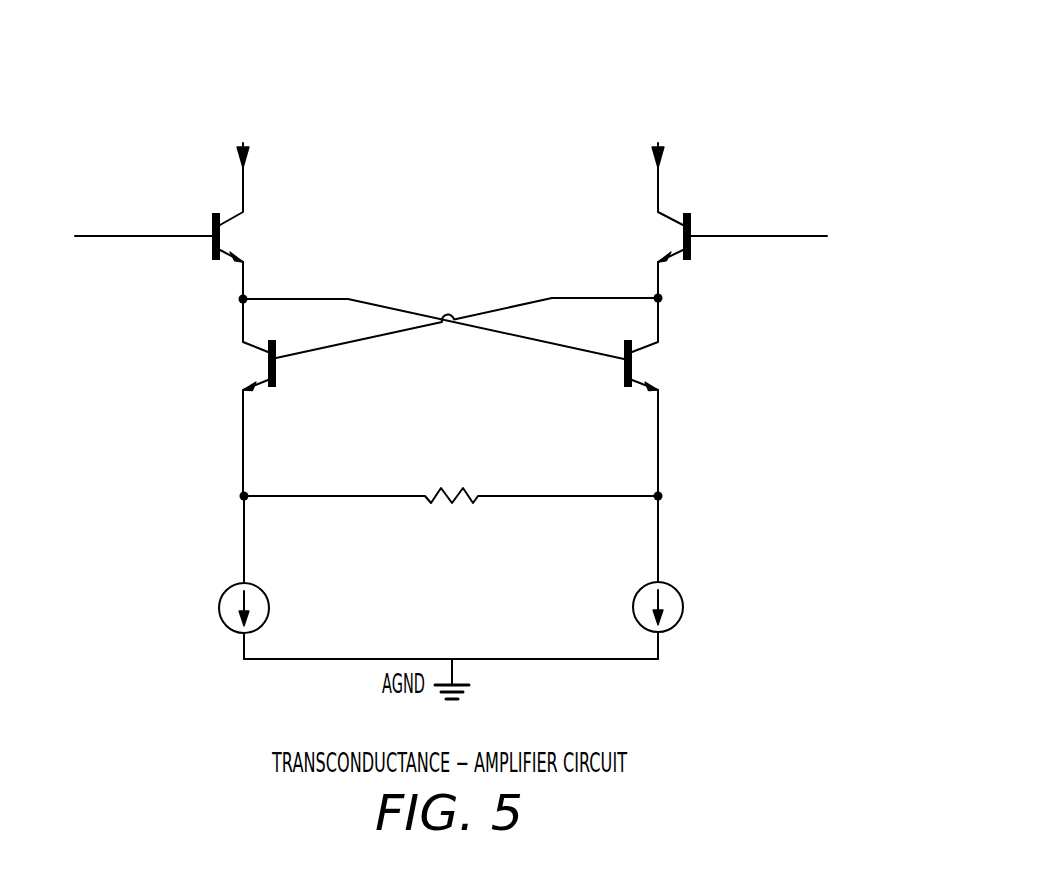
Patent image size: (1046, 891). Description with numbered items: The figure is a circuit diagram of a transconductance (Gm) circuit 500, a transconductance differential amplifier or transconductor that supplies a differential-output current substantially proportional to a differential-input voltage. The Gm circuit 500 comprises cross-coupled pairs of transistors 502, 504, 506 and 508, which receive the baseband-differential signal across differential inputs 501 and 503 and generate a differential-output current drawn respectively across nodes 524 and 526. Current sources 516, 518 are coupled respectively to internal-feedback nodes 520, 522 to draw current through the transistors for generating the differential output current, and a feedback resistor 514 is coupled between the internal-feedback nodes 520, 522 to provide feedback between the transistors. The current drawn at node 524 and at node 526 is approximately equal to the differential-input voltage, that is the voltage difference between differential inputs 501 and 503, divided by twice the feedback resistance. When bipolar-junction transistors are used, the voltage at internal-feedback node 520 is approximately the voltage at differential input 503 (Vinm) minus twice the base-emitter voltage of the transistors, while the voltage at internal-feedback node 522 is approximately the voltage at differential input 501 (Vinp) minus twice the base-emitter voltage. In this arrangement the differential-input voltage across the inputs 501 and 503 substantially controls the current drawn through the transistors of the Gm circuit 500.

The Gm circuit 500 is at (835, 88).
The differential input 501 is at (93, 235).
The transistor 502 is at (212, 252).
The differential input 503 is at (806, 235).
The transistor 504 is at (692, 252).
The transistor 506 is at (278, 376).
The transistor 508 is at (622, 376).
The feedback resistor 514 is at (448, 504).
The current source 516 is at (264, 592).
The current source 518 is at (638, 592).
The internal-feedback node 520 is at (246, 492).
The internal-feedback node 522 is at (656, 491).
The node 524 is at (246, 165).
The node 526 is at (655, 165).